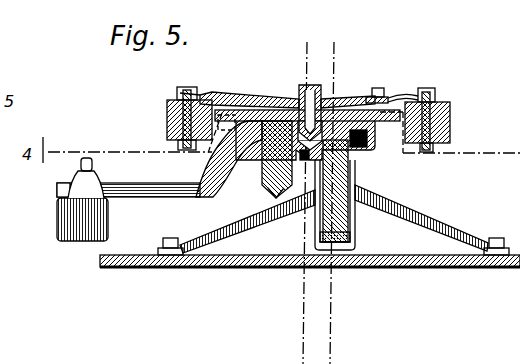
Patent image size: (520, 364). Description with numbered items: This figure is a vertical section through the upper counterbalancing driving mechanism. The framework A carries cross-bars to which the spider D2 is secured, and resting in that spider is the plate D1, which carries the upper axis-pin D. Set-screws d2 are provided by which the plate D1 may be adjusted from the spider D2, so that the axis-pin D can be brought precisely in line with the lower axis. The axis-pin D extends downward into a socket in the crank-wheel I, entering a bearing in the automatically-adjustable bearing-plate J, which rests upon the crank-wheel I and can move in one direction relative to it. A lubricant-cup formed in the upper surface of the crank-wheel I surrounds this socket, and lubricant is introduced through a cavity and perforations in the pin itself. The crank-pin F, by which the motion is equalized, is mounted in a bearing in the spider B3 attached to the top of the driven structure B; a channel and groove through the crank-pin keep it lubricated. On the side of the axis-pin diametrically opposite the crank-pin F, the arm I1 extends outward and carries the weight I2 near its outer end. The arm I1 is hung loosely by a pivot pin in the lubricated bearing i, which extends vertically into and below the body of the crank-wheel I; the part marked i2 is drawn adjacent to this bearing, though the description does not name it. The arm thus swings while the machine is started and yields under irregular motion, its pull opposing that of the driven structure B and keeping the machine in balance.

The framework A is at (166, 118).
The driven structure B is at (196, 266).
The spider B3 is at (250, 236).
The upper axis-pin D is at (322, 92).
The plate D1 is at (273, 95).
The spider D2 is at (230, 93).
The set-screws d2 is at (380, 88).
The crank-pin F is at (360, 198).
The crank-wheel I is at (368, 158).
The arm I1 is at (178, 196).
The weight I2 is at (66, 214).
The bearing-plate J is at (368, 138).
The bearing i is at (286, 180).
The wedge piece i2 is at (262, 172).